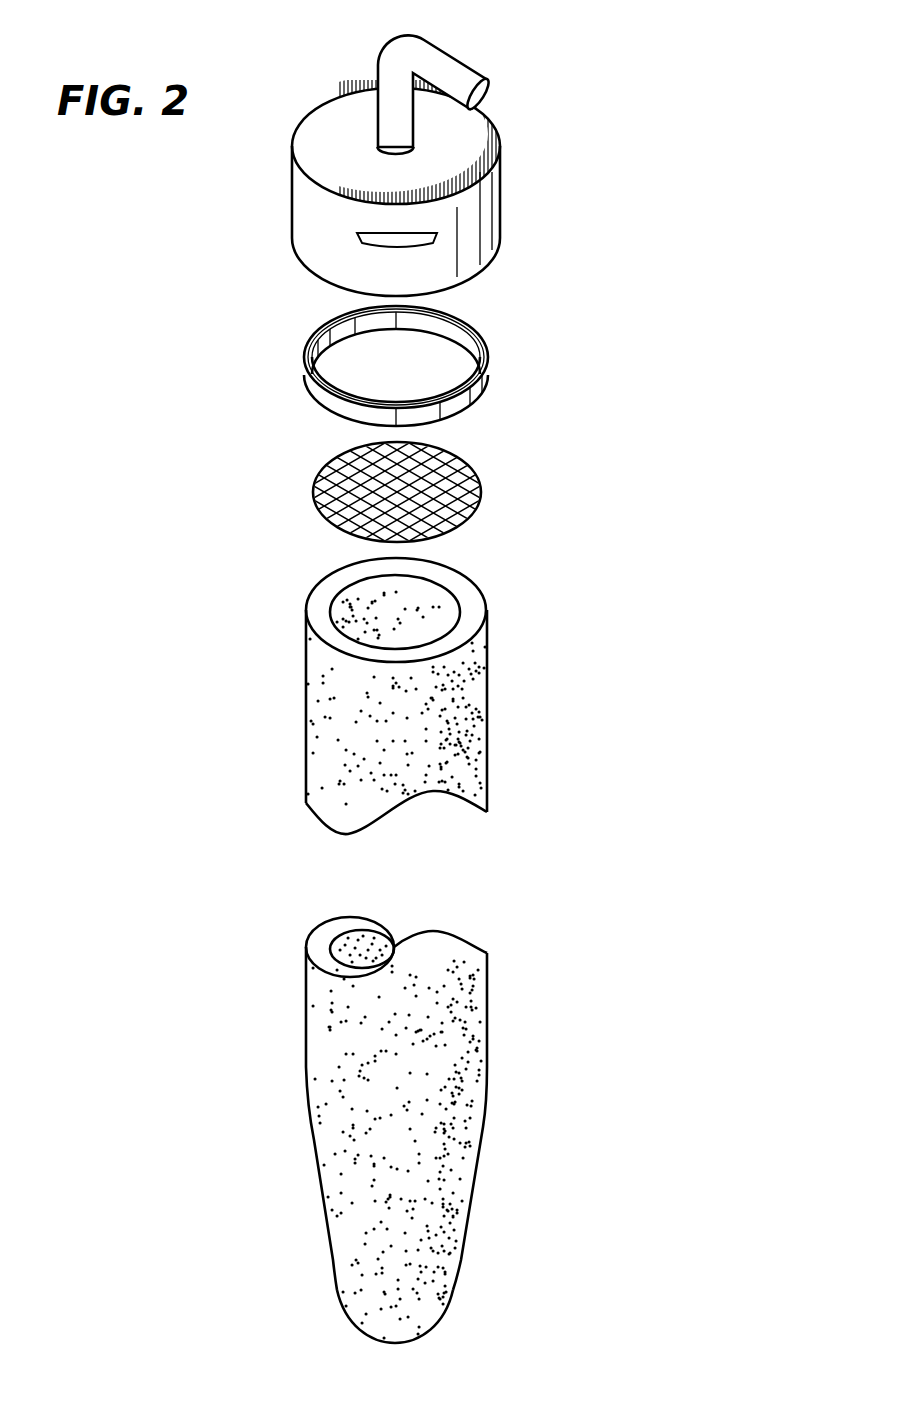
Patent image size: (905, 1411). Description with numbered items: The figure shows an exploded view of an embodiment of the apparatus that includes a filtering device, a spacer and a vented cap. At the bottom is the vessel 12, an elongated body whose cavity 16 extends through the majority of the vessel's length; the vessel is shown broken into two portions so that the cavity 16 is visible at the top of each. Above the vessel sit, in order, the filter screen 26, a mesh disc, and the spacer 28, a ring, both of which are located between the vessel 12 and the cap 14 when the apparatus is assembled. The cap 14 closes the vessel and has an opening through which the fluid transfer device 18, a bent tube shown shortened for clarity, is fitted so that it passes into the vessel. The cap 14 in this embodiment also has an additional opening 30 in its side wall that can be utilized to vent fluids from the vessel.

The vessel 12 is at (455, 1035).
The cap 14 is at (487, 190).
The cavity 16 is at (437, 604).
The fluid transfer device 18 is at (440, 63).
The filter screen 26 is at (485, 493).
The spacer 28 is at (490, 371).
The additional opening 30 is at (410, 248).